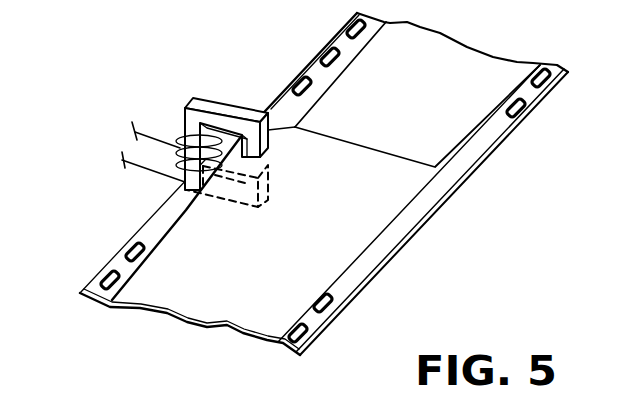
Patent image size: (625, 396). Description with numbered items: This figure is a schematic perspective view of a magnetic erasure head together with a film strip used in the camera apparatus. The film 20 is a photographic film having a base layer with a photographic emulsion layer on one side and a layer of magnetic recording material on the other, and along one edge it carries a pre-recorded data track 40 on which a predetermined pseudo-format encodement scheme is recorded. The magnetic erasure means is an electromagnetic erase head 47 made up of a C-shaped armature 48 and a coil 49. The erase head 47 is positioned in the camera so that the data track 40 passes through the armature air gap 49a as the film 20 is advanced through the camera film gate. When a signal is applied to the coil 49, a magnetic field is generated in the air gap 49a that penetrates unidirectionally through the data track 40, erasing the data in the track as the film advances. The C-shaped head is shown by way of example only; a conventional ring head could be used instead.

The film 20 is at (445, 207).
The pre-recorded data track 40 is at (283, 127).
The electromagnetic erase head 47 is at (160, 186).
The C-shaped armature 48 is at (220, 107).
The coil 49 is at (180, 143).
The armature air gap 49a is at (270, 157).